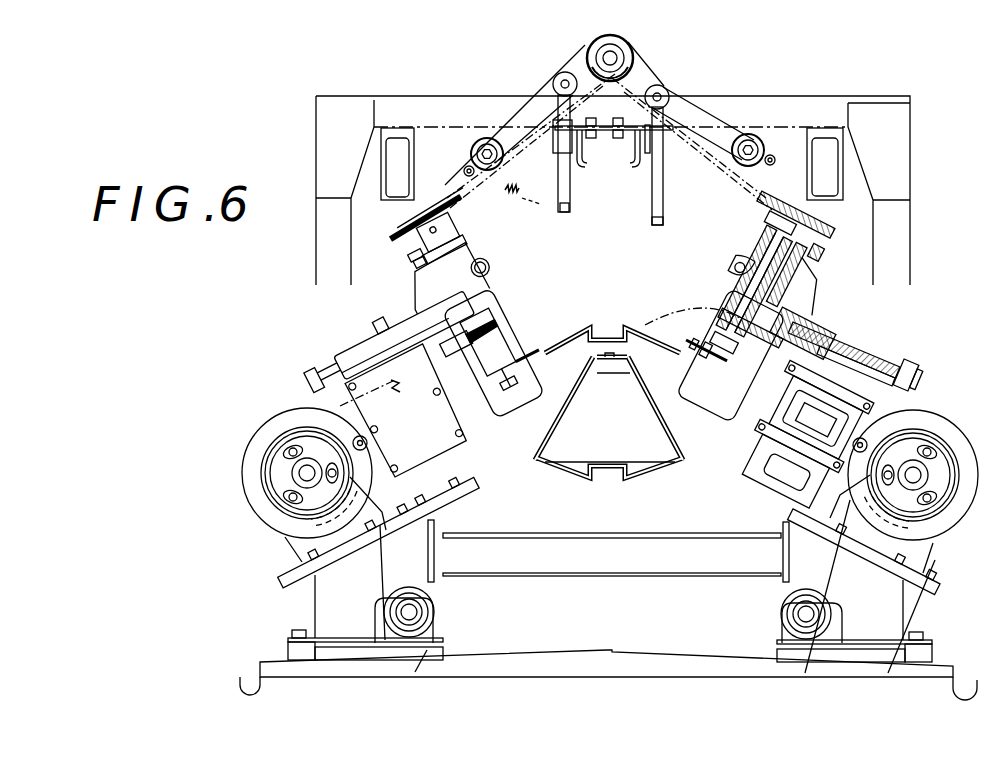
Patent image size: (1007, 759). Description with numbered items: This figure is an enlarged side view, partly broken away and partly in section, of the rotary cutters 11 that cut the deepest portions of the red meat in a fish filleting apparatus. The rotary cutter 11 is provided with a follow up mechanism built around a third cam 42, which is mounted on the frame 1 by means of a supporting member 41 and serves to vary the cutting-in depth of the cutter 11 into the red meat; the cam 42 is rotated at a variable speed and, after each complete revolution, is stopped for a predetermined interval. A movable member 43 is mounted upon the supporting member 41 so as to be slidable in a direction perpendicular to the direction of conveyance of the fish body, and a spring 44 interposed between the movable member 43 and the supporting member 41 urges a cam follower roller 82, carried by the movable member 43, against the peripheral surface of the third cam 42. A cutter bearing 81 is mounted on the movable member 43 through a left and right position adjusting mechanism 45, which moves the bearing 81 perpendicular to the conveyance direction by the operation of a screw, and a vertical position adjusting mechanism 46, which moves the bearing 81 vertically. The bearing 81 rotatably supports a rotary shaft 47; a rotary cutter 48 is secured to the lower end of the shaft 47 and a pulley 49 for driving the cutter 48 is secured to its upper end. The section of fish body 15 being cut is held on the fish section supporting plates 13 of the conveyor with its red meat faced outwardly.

The frame 1 is at (920, 657).
The rotary cutter 11 is at (899, 360).
The fish section supporting plate 13 is at (648, 322).
The section of fish body 15 is at (676, 345).
The supporting member 41 is at (892, 605).
The third cam 42 is at (290, 432).
The movable member 43 is at (440, 438).
The spring 44 is at (397, 394).
The left and right position adjusting mechanism 45 is at (860, 341).
The vertical position adjusting mechanism 46 is at (825, 255).
The rotary shaft 47 is at (748, 310).
The rotary cutter 48 is at (735, 375).
The pulley 49 is at (815, 232).
The cutter bearing 81 is at (757, 342).
The cam follower roller 82 is at (850, 442).